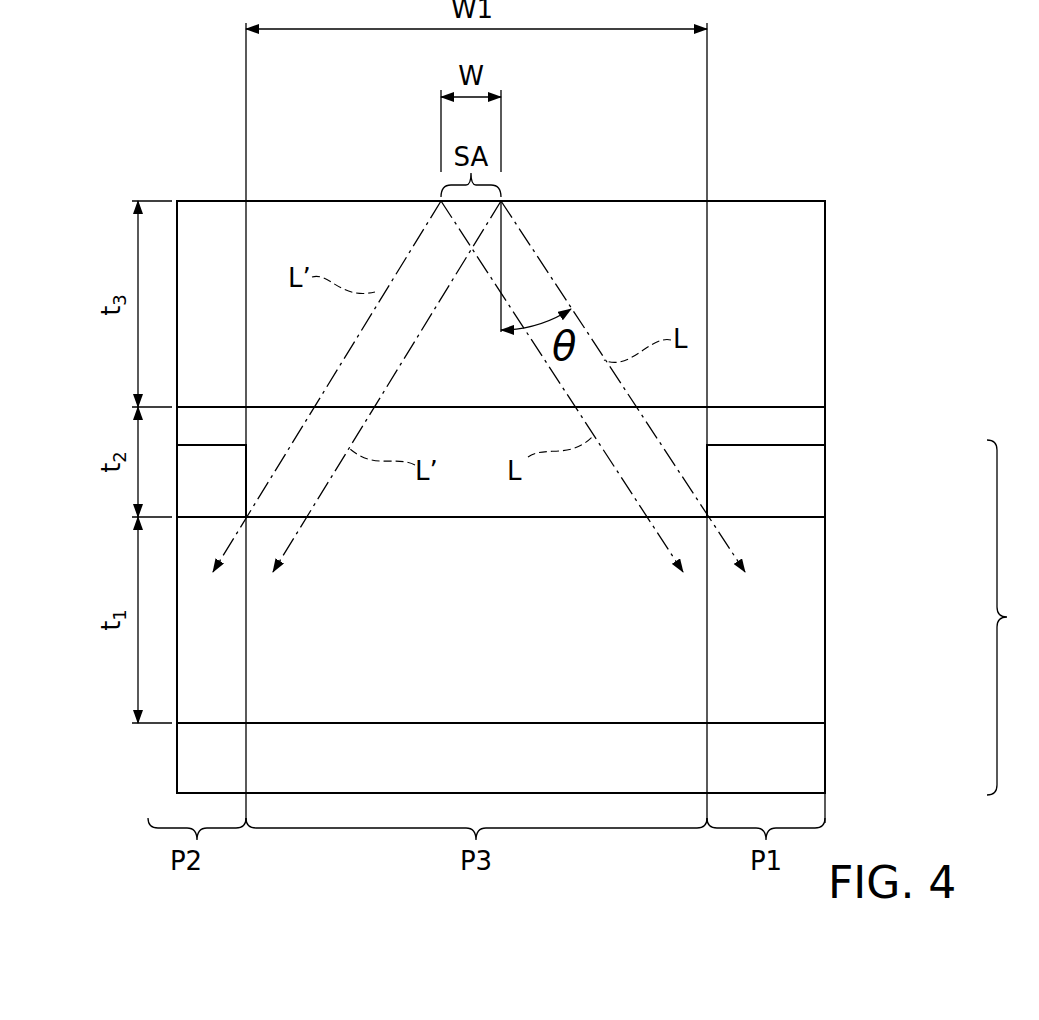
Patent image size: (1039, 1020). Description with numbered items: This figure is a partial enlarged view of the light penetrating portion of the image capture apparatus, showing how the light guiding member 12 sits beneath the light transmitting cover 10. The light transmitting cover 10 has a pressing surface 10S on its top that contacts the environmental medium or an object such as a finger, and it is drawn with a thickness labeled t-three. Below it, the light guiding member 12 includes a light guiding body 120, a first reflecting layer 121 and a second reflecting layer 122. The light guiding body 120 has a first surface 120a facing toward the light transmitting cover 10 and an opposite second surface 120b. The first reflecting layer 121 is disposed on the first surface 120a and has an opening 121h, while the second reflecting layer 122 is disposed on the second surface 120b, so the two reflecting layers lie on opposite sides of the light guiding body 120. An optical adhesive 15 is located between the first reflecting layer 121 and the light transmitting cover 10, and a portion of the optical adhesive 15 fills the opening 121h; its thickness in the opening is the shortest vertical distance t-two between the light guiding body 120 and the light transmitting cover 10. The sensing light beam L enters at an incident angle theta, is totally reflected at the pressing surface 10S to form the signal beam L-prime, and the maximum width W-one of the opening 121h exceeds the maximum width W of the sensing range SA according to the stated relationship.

The pressing surface 10S is at (778, 198).
The light transmitting cover 10 is at (805, 318).
The optical adhesive 15 is at (805, 425).
The light guiding member 12 is at (608, 601).
The first reflecting layer 121 is at (797, 470).
The opening 121h is at (248, 466).
The first surface 120a is at (793, 515).
The light guiding body 120 is at (797, 610).
The second surface 120b is at (790, 725).
The second reflecting layer 122 is at (805, 770).